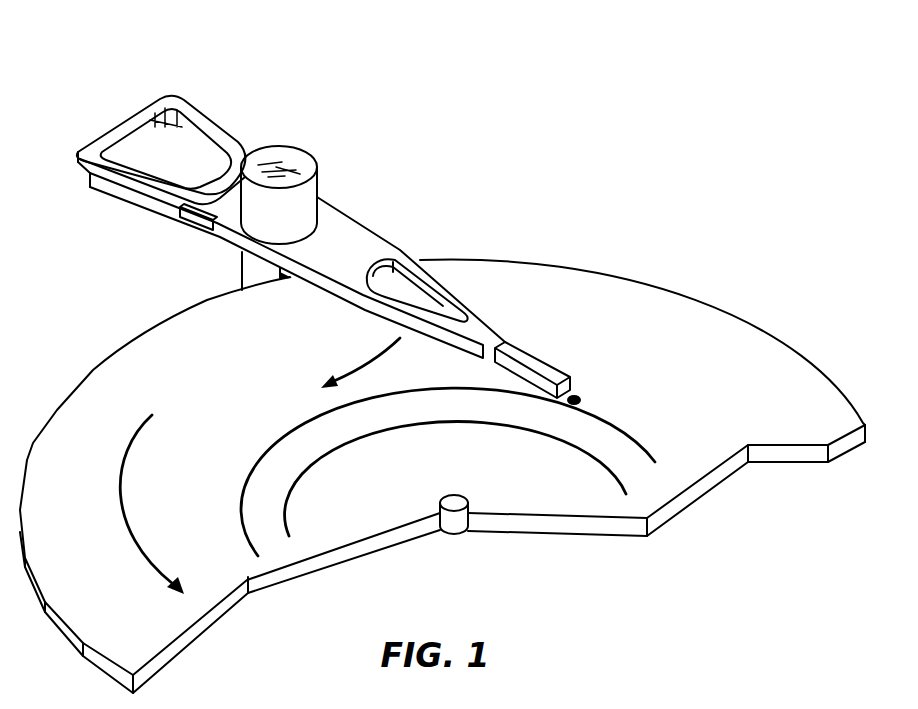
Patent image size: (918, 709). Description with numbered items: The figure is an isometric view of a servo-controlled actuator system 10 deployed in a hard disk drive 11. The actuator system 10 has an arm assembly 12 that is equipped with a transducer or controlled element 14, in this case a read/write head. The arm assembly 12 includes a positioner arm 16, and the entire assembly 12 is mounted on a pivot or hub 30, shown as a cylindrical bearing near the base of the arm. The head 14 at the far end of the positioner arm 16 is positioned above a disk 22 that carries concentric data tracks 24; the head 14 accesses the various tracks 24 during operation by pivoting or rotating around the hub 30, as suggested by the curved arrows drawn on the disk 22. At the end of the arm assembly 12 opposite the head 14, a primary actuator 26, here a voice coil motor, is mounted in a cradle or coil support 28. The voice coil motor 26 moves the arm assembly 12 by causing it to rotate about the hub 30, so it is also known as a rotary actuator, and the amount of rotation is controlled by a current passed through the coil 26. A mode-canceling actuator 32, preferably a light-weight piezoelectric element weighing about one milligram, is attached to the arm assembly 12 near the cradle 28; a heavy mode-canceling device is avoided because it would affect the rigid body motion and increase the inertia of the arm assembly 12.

The servo-controlled actuator system 10 is at (472, 112).
The hard disk drive 11 is at (686, 76).
The arm assembly 12 is at (114, 281).
The read/write head 14 is at (578, 396).
The positioner arm 16 is at (360, 237).
The disk 22 is at (717, 325).
The data tracks 24 is at (257, 462).
The voice coil motor 26 is at (125, 120).
The coil support 28 is at (207, 117).
The hub 30 is at (300, 153).
The mode-canceling actuator 32 is at (197, 222).